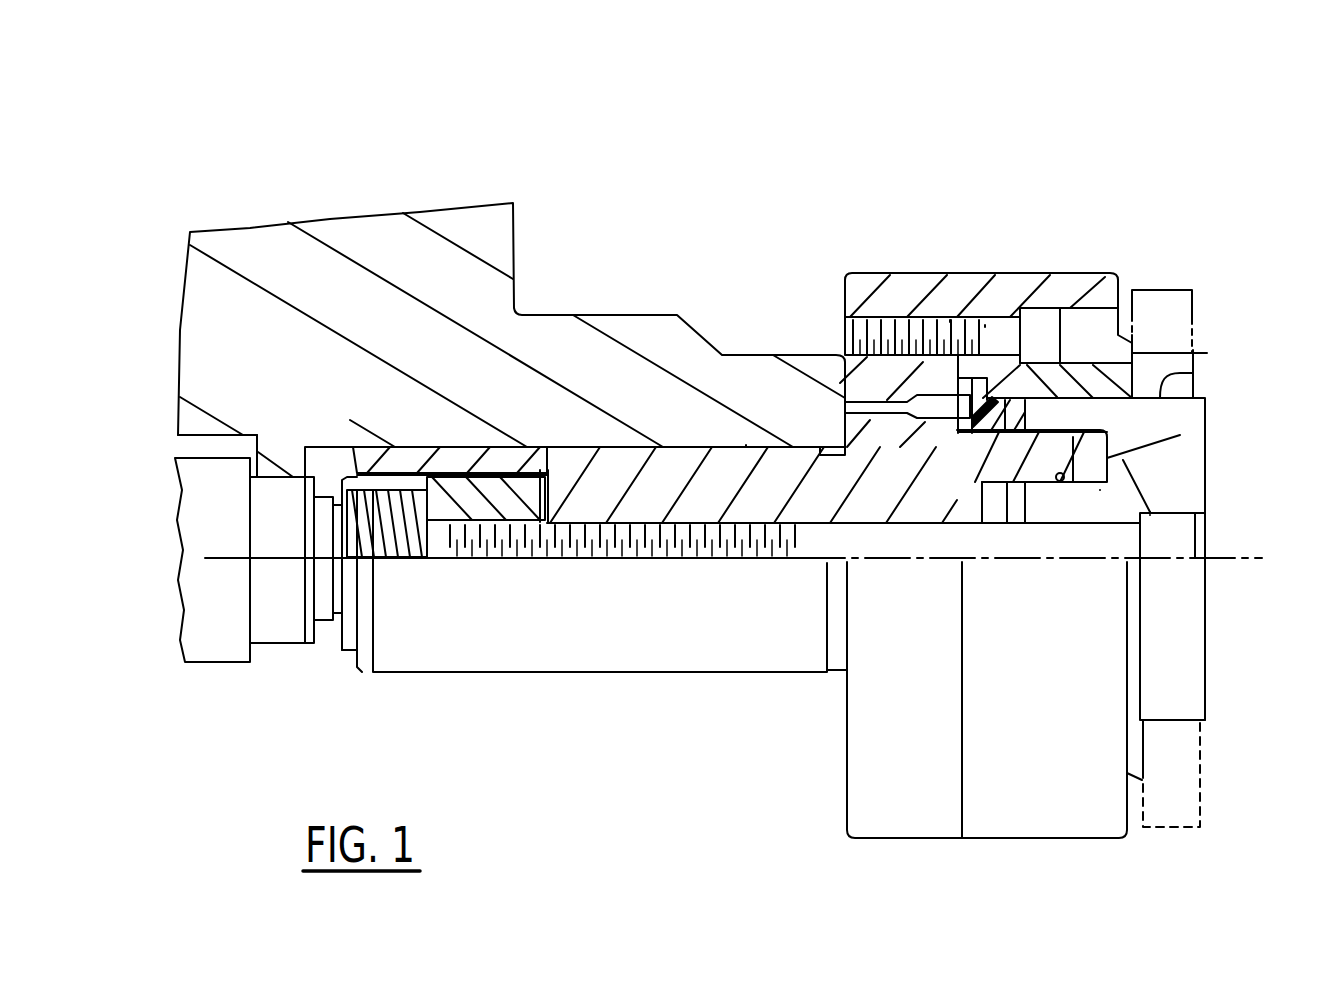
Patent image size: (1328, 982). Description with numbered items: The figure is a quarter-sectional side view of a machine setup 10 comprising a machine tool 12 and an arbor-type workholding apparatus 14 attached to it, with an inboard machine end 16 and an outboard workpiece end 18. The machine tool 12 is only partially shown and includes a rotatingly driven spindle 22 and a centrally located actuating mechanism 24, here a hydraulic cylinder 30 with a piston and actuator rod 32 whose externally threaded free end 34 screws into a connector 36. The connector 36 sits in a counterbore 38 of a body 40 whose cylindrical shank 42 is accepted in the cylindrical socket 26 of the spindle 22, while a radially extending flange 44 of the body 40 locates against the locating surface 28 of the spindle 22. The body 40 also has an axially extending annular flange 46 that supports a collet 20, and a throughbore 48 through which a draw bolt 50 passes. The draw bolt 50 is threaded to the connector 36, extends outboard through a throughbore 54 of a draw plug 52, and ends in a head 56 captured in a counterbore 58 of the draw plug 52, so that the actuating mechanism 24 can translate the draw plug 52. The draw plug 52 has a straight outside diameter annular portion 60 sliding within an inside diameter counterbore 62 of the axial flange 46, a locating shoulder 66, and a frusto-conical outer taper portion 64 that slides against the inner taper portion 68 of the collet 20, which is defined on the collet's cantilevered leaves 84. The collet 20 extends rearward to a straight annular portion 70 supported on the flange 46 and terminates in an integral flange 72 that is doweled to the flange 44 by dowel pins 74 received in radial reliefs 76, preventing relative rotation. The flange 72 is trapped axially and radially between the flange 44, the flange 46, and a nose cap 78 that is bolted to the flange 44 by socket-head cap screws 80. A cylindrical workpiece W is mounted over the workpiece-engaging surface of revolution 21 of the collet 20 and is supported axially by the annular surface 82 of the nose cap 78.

The machine setup 10 is at (596, 107).
The machine tool 12 is at (157, 360).
The workholding apparatus 14 is at (1108, 238).
The machine end 16 is at (345, 664).
The workpiece end 18 is at (1214, 690).
The collet 20 is at (1207, 398).
The workpiece-engaging surface of revolution 21 is at (1193, 373).
The spindle 22 is at (610, 312).
The actuating mechanism 24 is at (190, 450).
The cylindrical socket 26 is at (745, 452).
The locating surface 28 is at (856, 345).
The hydraulic cylinder 30 is at (190, 520).
The actuator rod 32 is at (293, 485).
The free end 34 is at (388, 540).
The connector 36 is at (495, 510).
The counterbore 38 is at (527, 557).
The body 40 is at (840, 677).
The cylindrical shank 42 is at (703, 658).
The radially extending flange 44 is at (862, 280).
The axially extending annular flange 46 is at (1060, 443).
The throughbore 48 is at (745, 563).
The draw bolt 50 is at (750, 553).
The draw plug 52 is at (1210, 496).
The throughbore 54 is at (1100, 490).
The head 56 is at (1172, 537).
The counterbore 58 is at (1156, 516).
The straight outside diameter annular portion 60 is at (1060, 485).
The inside diameter counterbore 62 is at (1005, 487).
The outer taper portion 64 is at (1188, 437).
The locating shoulder 66 is at (1078, 487).
The inner taper portion 68 is at (1165, 445).
The straight annular portion 70 is at (1050, 395).
The integral flange 72 is at (955, 325).
The dowel pins 74 is at (942, 413).
The radial slots or reliefs 76 is at (958, 430).
The nose cap 78 is at (1107, 841).
The socket-head cap screws 80 is at (988, 327).
The axially-locating radially-extending annular surface 82 is at (1193, 350).
The cantilevered fingers or leaves 84 is at (1207, 412).
The workpiece W is at (1175, 293).